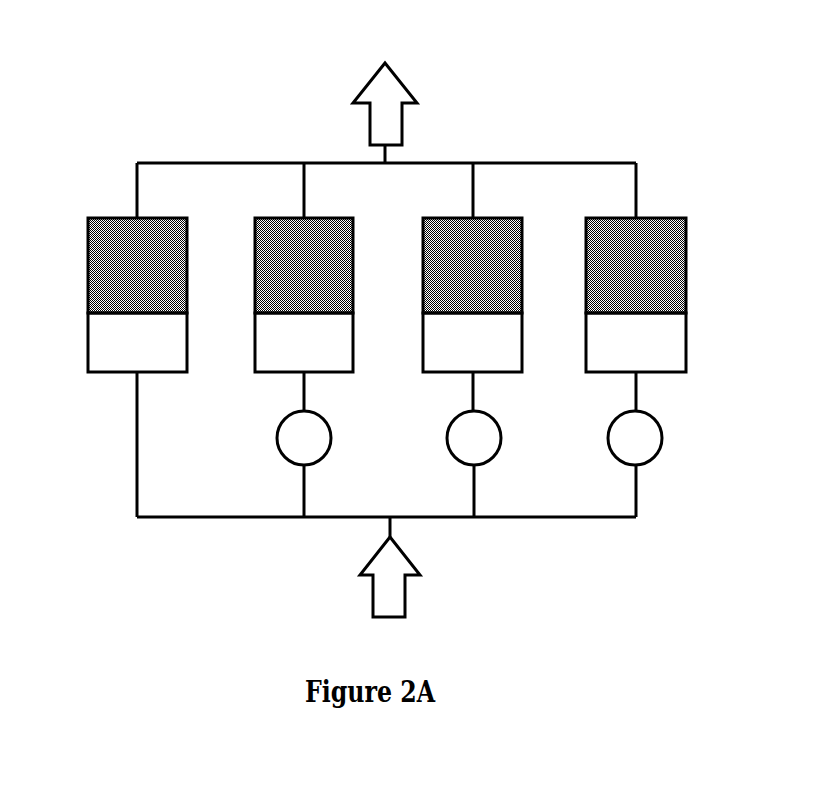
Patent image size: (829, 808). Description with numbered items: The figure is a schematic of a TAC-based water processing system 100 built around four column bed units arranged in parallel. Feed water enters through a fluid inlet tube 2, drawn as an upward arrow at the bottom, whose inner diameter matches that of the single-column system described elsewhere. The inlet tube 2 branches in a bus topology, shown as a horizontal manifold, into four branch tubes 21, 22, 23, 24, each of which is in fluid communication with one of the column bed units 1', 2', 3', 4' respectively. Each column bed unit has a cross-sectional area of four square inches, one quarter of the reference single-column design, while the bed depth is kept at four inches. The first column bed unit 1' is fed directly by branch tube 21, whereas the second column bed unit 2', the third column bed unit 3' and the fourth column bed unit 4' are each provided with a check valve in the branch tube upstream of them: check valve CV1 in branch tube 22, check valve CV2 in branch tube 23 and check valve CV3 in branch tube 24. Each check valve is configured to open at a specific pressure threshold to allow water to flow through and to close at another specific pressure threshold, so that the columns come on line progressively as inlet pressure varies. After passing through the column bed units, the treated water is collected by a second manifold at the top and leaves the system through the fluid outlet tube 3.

The TAC-based water processing system 100 is at (386, 299).
The fluid outlet tube 3 is at (385, 113).
The fluid inlet tube 2 is at (390, 567).
The first column bed unit 1' is at (121, 267).
The second column bed unit 2' is at (290, 287).
The third column bed unit 3' is at (458, 287).
The fourth column bed unit 4' is at (624, 287).
The branch tube 21 is at (122, 444).
The branch tube 22 is at (288, 491).
The branch tube 23 is at (459, 491).
The branch tube 24 is at (621, 491).
The check valve CV1 is at (304, 438).
The check valve CV2 is at (474, 438).
The check valve CV3 is at (635, 438).